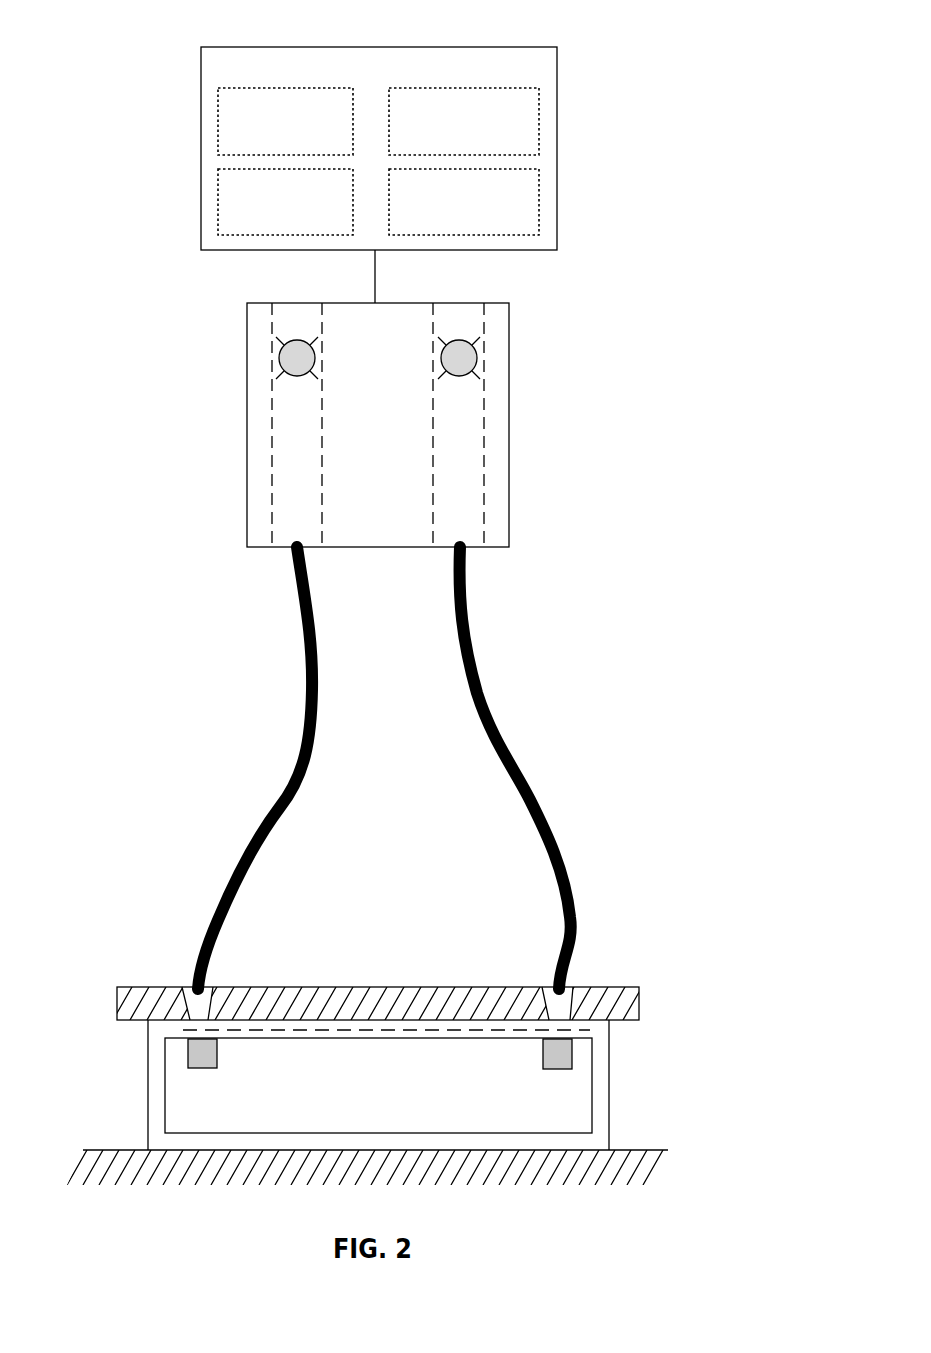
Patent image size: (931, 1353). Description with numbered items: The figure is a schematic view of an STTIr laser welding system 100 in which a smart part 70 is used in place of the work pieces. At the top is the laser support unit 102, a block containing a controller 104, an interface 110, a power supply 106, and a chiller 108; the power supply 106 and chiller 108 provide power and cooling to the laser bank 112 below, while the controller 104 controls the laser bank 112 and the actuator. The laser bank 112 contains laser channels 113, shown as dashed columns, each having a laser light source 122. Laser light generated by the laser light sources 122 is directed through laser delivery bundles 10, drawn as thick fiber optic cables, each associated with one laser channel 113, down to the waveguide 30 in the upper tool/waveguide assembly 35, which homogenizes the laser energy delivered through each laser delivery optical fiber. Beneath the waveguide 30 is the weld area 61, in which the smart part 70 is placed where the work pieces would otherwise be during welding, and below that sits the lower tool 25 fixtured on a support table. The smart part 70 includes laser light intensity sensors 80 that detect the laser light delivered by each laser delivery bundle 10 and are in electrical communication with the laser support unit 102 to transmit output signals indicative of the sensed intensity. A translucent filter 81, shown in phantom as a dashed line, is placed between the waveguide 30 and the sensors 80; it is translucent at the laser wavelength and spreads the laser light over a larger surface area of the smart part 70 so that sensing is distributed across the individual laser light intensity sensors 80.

The STTIr laser welding system 100 is at (730, 178).
The laser support unit 102 is at (557, 68).
The controller 104 is at (218, 120).
The power supply 106 is at (218, 207).
The chiller 108 is at (539, 202).
The interface 110 is at (539, 113).
The laser bank 112 is at (509, 325).
The laser channel 113 is at (270, 408).
The laser light source 122 is at (295, 357).
The laser delivery bundle 10 is at (317, 667).
The waveguide 30 is at (393, 950).
The upper tool/waveguide assembly 35 is at (618, 1003).
The weld area 61 is at (133, 1090).
The smart part 70 is at (610, 1107).
The laser light intensity sensor 80 is at (202, 1057).
The translucent filter 81 is at (270, 1028).
The lower tool 25 is at (663, 1167).